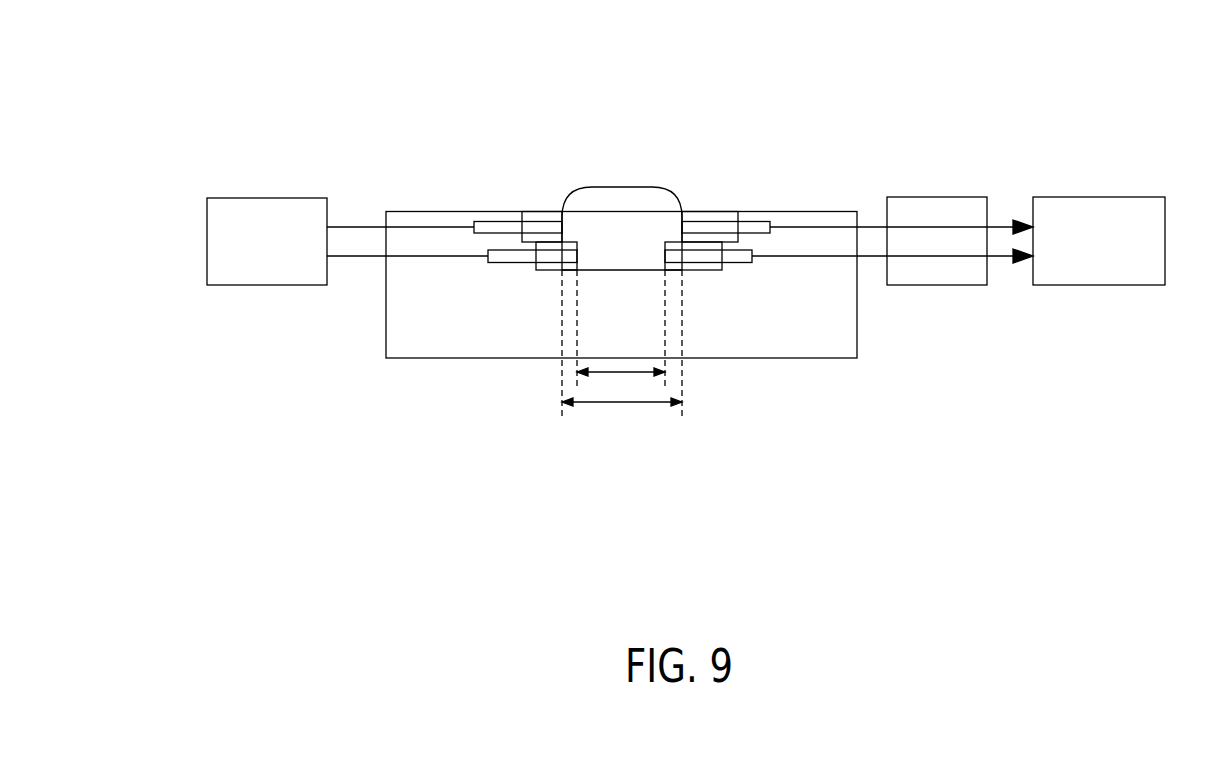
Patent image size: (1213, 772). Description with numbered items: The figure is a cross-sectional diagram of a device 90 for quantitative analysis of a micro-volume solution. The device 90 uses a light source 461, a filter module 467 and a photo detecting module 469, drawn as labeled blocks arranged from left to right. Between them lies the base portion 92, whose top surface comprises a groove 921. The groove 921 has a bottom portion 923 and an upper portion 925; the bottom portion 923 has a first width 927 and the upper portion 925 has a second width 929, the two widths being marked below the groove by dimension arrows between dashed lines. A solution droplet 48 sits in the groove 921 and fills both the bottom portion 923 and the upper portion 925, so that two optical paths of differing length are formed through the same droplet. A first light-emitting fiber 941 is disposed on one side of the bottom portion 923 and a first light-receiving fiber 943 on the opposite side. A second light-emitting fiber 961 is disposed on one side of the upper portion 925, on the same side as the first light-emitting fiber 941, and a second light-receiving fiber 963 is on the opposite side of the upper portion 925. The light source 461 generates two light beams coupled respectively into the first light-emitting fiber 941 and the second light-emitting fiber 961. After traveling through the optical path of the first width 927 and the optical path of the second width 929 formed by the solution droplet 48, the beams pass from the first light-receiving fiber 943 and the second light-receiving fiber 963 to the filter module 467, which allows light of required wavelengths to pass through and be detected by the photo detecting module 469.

The device for quantitative analysis of a micro-volume solution 90 is at (960, 56).
The light source 461 is at (237, 201).
The filter module 467 is at (947, 195).
The photo detecting module 469 is at (1095, 195).
The base portion 92 is at (710, 358).
The solution droplet 48 is at (607, 193).
The second light-emitting fiber 961 is at (503, 224).
The second light-receiving fiber 963 is at (708, 227).
The first light-emitting fiber 941 is at (520, 263).
The first light-receiving fiber 943 is at (733, 263).
The upper portion 925 is at (600, 236).
The bottom portion 923 is at (600, 267).
The groove 921 is at (632, 271).
The first width 927 is at (637, 374).
The second width 929 is at (620, 403).